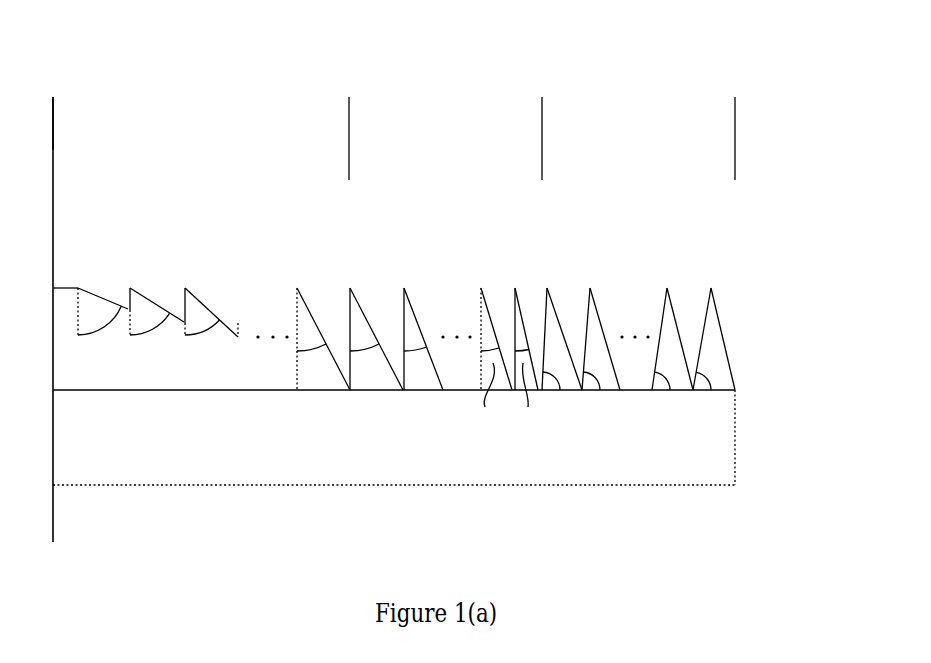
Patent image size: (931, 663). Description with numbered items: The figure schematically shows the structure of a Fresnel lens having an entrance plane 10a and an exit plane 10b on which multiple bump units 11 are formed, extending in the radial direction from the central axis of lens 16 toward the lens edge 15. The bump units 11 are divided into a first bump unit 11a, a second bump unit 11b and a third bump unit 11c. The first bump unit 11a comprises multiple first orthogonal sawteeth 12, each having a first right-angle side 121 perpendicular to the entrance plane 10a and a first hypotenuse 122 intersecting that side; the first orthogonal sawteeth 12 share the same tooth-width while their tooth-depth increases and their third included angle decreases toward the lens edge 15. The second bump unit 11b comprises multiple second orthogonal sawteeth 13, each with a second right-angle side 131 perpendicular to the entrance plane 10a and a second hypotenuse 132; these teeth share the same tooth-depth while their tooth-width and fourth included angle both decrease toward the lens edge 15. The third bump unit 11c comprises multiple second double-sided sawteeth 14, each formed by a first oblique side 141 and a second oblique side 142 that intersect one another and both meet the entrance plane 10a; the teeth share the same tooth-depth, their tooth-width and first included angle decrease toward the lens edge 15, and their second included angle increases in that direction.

The bump units 11 is at (717, 90).
The first bump unit 11a is at (349, 133).
The second bump unit 11b is at (542, 133).
The third bump unit 11c is at (735, 133).
The first orthogonal sawteeth 12 is at (171, 272).
The first right-angle side 121 is at (184, 300).
The first hypotenuse 122 is at (205, 308).
The second orthogonal sawteeth 13 is at (417, 308).
The second right-angle side 131 is at (402, 325).
The second hypotenuse 132 is at (420, 330).
The second double-sided sawteeth 14 is at (638, 304).
The first oblique side 141 is at (587, 318).
The second oblique side 142 is at (602, 330).
The entrance plane 10a is at (560, 485).
The exit plane 10b is at (738, 345).
The lens edge 15 is at (435, 445).
The central axis of lens 16 is at (55, 497).